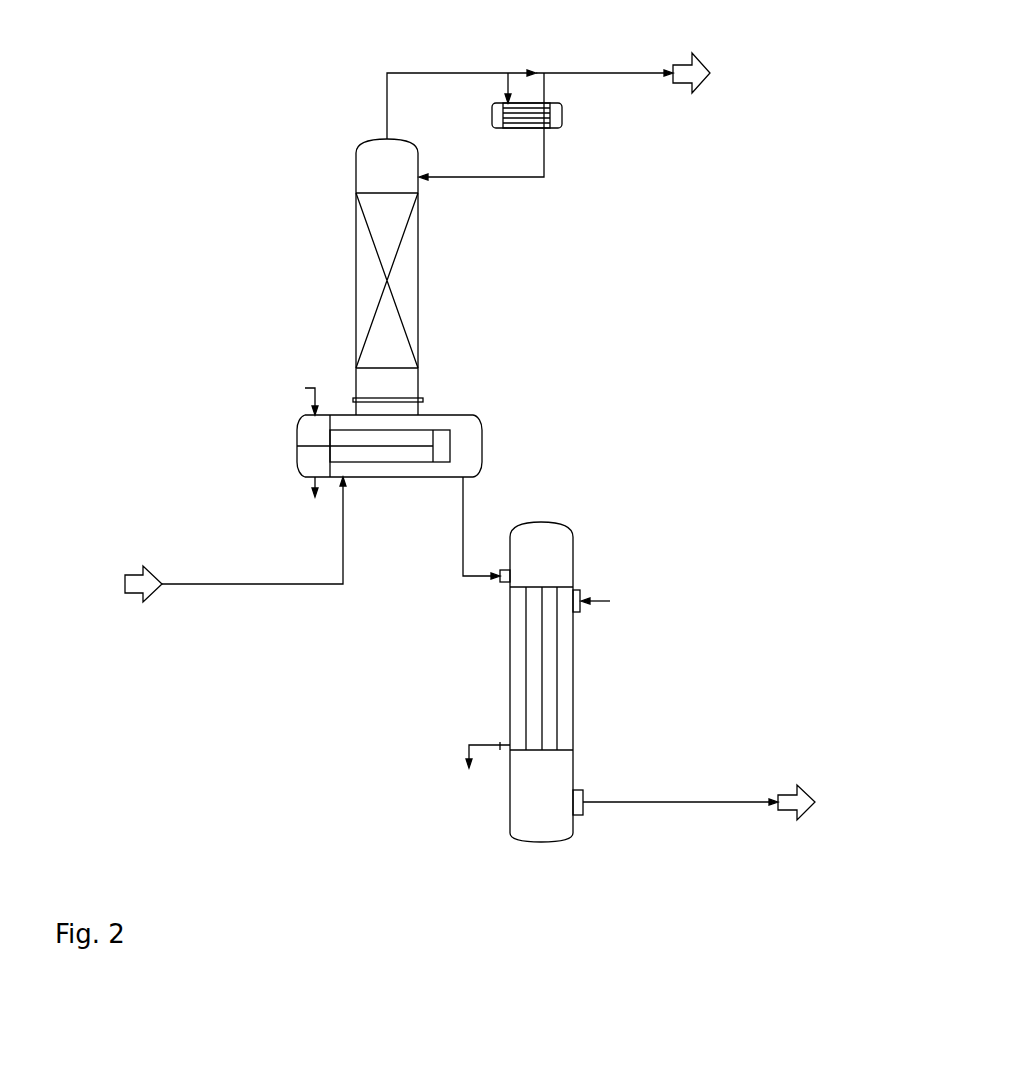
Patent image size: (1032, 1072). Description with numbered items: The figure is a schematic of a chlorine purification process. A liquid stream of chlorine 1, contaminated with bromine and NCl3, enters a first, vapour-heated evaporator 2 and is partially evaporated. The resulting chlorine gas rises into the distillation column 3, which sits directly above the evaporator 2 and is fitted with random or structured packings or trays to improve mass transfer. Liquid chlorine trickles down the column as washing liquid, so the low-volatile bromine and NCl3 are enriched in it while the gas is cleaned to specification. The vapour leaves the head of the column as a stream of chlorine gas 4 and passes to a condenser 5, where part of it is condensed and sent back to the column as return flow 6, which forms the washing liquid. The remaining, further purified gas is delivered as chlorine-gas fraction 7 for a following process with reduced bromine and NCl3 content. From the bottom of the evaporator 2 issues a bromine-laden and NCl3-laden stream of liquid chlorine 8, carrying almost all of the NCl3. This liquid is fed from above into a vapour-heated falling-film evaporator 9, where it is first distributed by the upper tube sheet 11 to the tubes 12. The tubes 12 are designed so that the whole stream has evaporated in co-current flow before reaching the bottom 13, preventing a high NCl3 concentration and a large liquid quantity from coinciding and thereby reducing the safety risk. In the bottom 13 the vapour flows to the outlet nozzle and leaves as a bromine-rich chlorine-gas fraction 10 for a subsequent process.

The stream of chlorine 1 is at (265, 584).
The evaporator 2 is at (480, 430).
The distillation column 3 is at (418, 327).
The stream of chlorine gas 4 is at (440, 73).
The condenser 5 is at (492, 115).
The return flow 6 is at (512, 178).
The chlorine-gas fraction 7 is at (633, 75).
The stream of liquid chlorine 8 is at (462, 562).
The falling-film evaporator 9 is at (573, 672).
The bromine-rich chlorine-gas fraction 10 is at (695, 802).
The upper tube sheet 11 is at (552, 583).
The tubes 12 is at (557, 613).
The bottom 13 is at (537, 803).